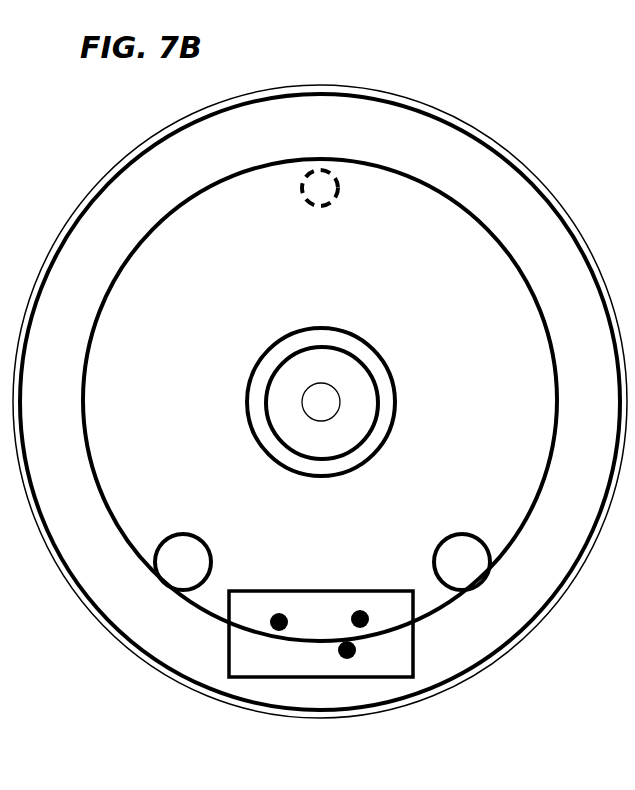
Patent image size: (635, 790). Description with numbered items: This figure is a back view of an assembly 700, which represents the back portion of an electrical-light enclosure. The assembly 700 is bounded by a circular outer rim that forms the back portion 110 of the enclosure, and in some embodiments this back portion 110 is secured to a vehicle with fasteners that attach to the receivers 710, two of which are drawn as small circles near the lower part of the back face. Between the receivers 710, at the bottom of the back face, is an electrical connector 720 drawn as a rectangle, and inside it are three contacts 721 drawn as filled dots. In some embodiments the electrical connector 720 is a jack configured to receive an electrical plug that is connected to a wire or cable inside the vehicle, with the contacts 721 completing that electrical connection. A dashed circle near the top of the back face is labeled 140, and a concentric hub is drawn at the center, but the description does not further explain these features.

The assembly 700 is at (514, 136).
The back portion 110 is at (559, 207).
The opening 140 is at (304, 197).
The receivers 710 is at (207, 545).
The electrical connector 720 is at (229, 676).
The contacts 721 is at (279, 622).